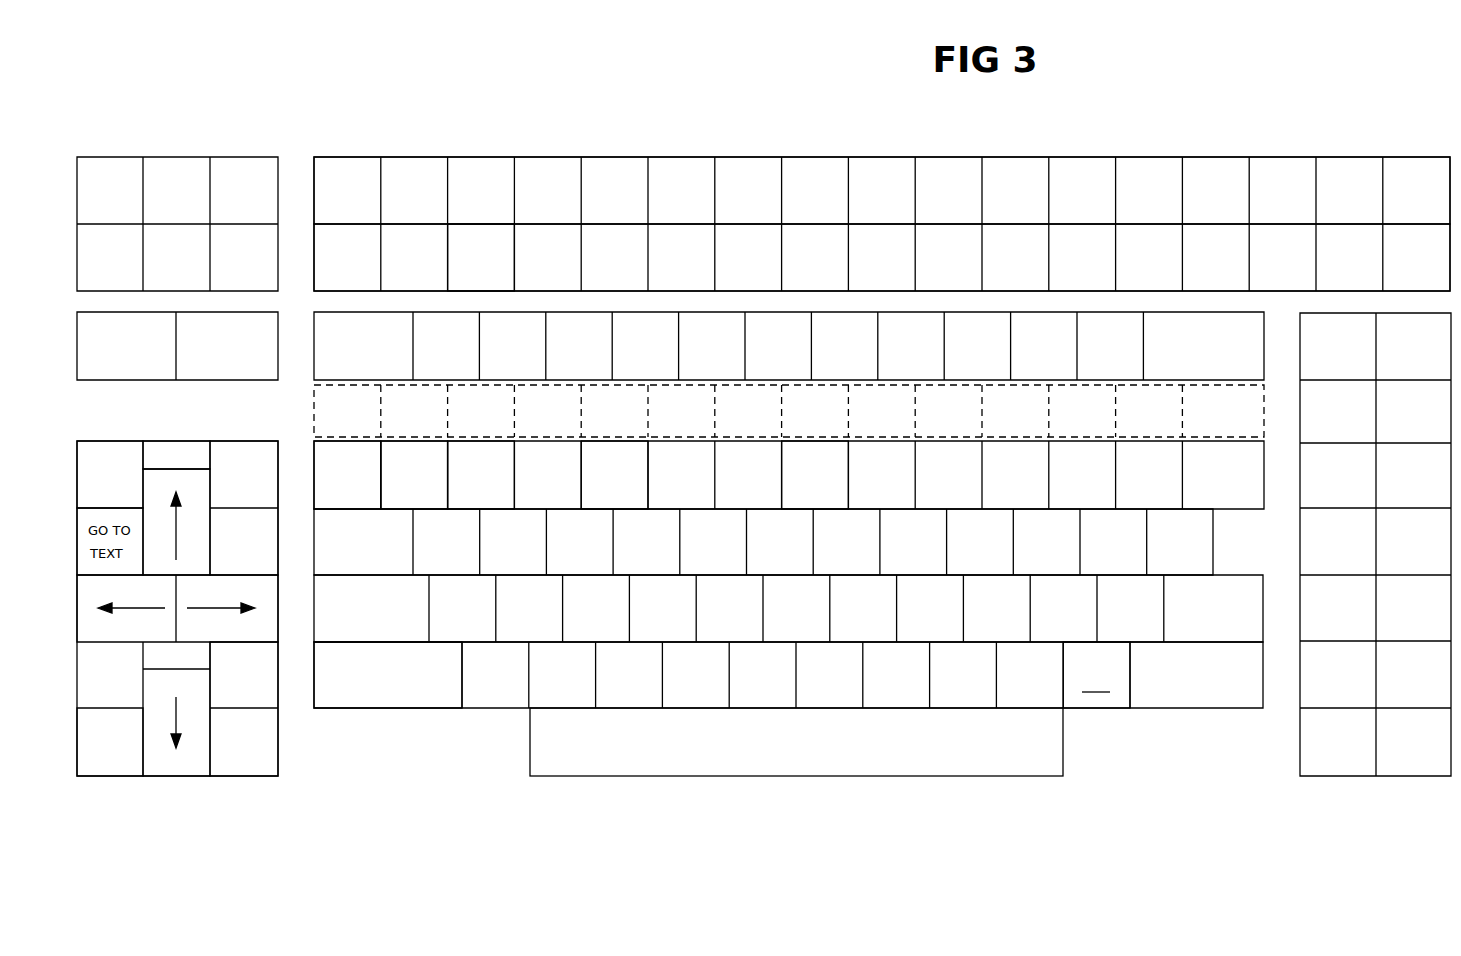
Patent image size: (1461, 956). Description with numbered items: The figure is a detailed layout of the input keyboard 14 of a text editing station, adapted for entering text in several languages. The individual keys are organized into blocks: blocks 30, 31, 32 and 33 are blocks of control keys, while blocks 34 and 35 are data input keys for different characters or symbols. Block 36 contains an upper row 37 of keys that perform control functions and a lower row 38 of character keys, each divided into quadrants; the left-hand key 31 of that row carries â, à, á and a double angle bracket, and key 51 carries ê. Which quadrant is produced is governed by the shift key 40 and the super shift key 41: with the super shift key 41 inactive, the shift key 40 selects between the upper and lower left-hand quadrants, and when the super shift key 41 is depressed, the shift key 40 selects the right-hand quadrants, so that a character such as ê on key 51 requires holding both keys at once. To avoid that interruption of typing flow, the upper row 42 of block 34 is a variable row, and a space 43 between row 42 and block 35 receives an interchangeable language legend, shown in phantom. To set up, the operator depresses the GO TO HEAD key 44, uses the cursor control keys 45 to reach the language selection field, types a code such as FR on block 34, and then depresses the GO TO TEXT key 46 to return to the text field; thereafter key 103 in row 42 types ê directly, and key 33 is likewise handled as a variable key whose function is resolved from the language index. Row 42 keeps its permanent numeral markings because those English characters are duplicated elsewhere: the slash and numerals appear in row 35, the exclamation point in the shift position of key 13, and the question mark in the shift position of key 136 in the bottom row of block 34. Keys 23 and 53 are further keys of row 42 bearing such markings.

The keyboard 14 is at (1138, 762).
The block of control keys 30 is at (170, 810).
The block of control keys / left-hand key 31 is at (231, 380).
The block of control keys 32 is at (223, 157).
The block of control keys / variable key 33 is at (1314, 786).
The block of data input keys 34 is at (392, 708).
The block of data input keys 35 is at (314, 355).
The block 36 is at (510, 157).
The upper row of keys 37 is at (314, 208).
The lower row of keys 38 is at (314, 270).
The shift key 40 is at (330, 708).
The super shift key 41 is at (105, 777).
The upper row / variable row 42 is at (314, 474).
The space 43 is at (314, 418).
The GO TO HEAD key 44 is at (100, 441).
The cursor control keys 45 is at (268, 621).
The GO TO TEXT key 46 is at (290, 539).
The key 13 is at (347, 475).
The key 23 is at (414, 475).
The key 53 is at (614, 475).
The key 103 is at (815, 475).
The key 51 is at (481, 257).
The key 136 is at (1096, 675).